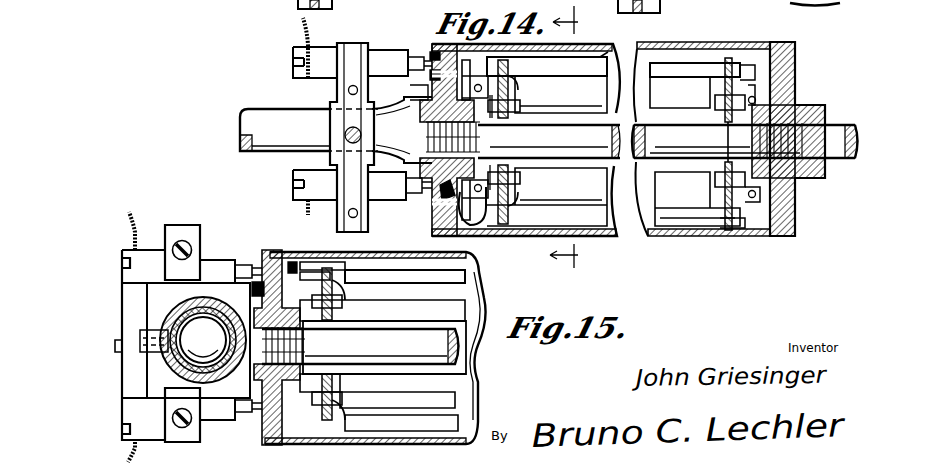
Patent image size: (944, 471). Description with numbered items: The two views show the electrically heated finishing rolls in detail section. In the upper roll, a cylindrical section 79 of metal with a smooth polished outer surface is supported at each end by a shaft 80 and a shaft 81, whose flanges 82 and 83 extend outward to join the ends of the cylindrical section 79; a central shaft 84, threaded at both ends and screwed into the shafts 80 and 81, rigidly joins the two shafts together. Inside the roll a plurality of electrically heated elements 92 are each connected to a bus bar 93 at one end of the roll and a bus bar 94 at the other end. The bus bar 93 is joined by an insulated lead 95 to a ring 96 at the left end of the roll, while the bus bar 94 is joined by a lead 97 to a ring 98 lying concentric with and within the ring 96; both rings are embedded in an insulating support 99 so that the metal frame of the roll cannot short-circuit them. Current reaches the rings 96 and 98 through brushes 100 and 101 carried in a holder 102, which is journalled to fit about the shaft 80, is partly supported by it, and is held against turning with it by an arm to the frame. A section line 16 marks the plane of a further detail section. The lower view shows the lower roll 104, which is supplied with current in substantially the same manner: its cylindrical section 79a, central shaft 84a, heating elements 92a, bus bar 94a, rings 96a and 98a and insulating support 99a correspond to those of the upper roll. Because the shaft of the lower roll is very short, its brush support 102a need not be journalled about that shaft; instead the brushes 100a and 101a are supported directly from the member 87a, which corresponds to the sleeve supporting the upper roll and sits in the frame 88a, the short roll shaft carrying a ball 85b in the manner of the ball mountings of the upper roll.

In FIG. 14, the section line 16 is at (572, 135).
In FIG. 14, the cylindrical section 79 is at (577, 48).
In FIG. 15, the housing 79a is at (312, 445).
In FIG. 14, the shaft 80 is at (272, 122).
In FIG. 14, the shaft 81 is at (838, 124).
In FIG. 14, the flange 82 is at (432, 55).
In FIG. 14, the flange 83 is at (788, 52).
In FIG. 14, the central shaft 84 is at (496, 130).
In FIG. 15, the armature shaft 84a is at (364, 347).
In FIG. 15, the bearing 85b is at (203, 340).
In FIG. 15, the member 87a is at (122, 355).
In FIG. 15, the bearing ring 88a is at (188, 310).
In FIG. 14, the electrically heated elements 92 is at (598, 99).
In FIG. 15, the field coil 92a is at (418, 275).
In FIG. 14, the bus bar 93 is at (725, 214).
In FIG. 14, the bus bar 94 is at (505, 226).
In FIG. 15, the contact plate 94a is at (333, 312).
In FIG. 14, the insulated lead 95 is at (748, 78).
In FIG. 14, the ring 96 is at (430, 58).
In FIG. 15, the terminal lead 96a is at (258, 262).
In FIG. 14, the lead 97 is at (472, 226).
In FIG. 14, the ring 98 is at (438, 200).
In FIG. 15, the contact 98a is at (289, 281).
In FIG. 14, the insulating support 99 is at (415, 88).
In FIG. 15, the contact 99a is at (256, 289).
In FIG. 14, the brush 100 is at (410, 52).
In FIG. 15, the brush 100a is at (242, 262).
In FIG. 14, the brush 101 is at (405, 198).
In FIG. 15, the brush 101a is at (238, 412).
In FIG. 14, the holder 102 is at (352, 78).
In FIG. 15, the mounting bracket 102a is at (132, 308).
In FIG. 15, the lower roll 104 is at (425, 444).